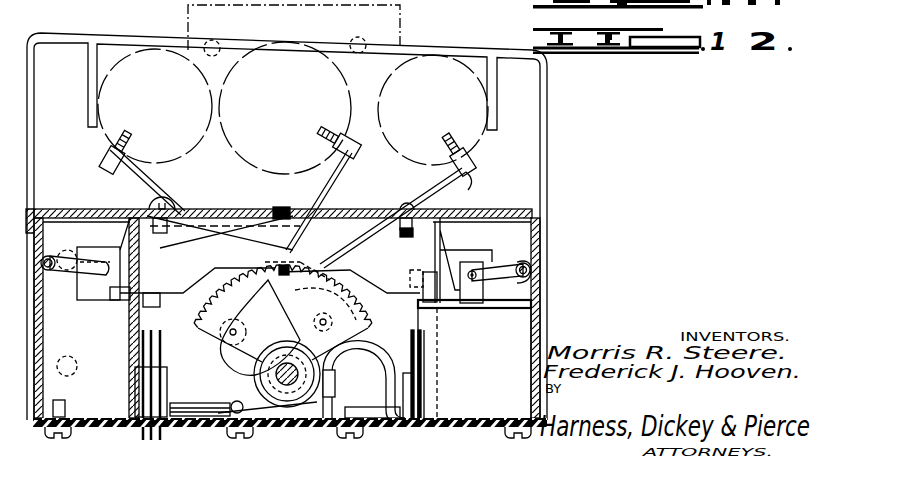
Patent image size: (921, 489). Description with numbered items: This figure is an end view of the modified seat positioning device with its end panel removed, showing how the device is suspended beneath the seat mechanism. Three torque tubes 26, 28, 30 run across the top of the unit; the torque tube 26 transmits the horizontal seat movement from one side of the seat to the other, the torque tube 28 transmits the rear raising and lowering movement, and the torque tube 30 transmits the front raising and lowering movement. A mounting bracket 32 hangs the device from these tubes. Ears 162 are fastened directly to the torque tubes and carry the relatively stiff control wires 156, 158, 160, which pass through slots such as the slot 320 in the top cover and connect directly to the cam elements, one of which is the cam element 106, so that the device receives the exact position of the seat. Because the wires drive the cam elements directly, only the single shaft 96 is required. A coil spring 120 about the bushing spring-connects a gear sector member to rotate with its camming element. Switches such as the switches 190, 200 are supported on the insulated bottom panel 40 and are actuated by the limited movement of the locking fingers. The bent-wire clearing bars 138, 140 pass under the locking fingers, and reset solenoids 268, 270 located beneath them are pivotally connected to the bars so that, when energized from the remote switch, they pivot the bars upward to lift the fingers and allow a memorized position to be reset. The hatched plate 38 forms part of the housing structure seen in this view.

The torque tube 26 is at (140, 60).
The torque tube 28 is at (297, 36).
The torque tube 30 is at (458, 70).
The mounting bracket 32 is at (547, 118).
The cover plate 38 is at (507, 213).
The insulated bottom panel 40 is at (443, 430).
The shaft 96 is at (250, 380).
The cam element 106 is at (217, 345).
The coil spring 120 is at (222, 363).
The clearing bar 138 is at (494, 262).
The clearing bar 140 is at (100, 302).
The control wire 156 is at (468, 197).
The control wire 158 is at (325, 183).
The control wire 160 is at (150, 184).
The ear 162 is at (100, 143).
The switch 190 is at (175, 341).
The switch 200 is at (407, 347).
The reset solenoid 268 is at (505, 349).
The reset solenoid 270 is at (105, 336).
The slot 320 is at (392, 200).